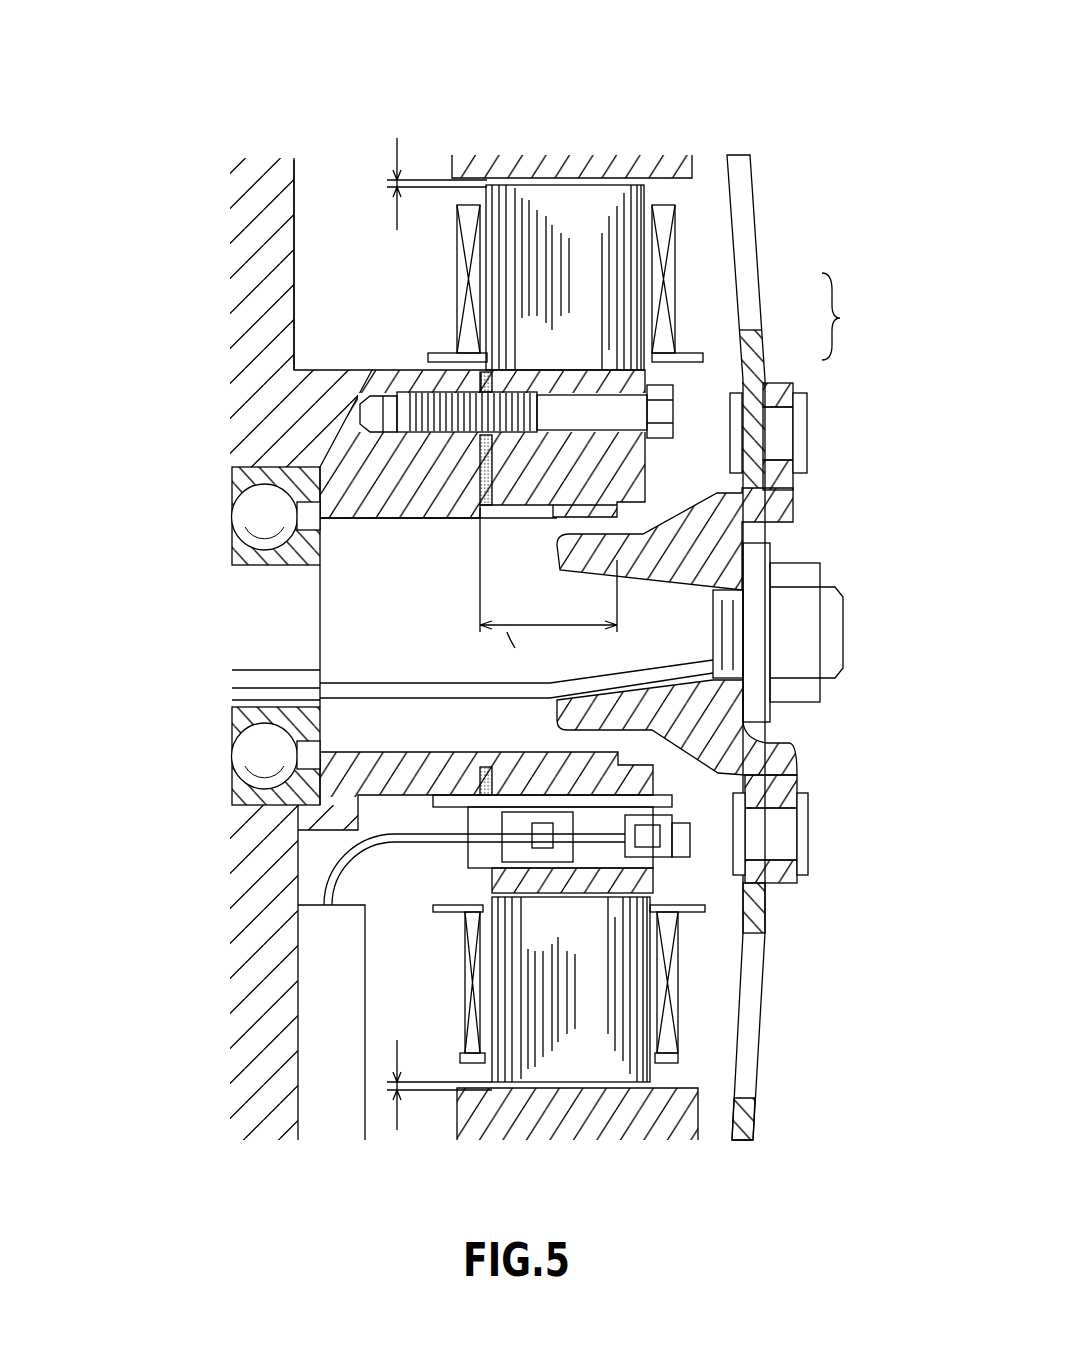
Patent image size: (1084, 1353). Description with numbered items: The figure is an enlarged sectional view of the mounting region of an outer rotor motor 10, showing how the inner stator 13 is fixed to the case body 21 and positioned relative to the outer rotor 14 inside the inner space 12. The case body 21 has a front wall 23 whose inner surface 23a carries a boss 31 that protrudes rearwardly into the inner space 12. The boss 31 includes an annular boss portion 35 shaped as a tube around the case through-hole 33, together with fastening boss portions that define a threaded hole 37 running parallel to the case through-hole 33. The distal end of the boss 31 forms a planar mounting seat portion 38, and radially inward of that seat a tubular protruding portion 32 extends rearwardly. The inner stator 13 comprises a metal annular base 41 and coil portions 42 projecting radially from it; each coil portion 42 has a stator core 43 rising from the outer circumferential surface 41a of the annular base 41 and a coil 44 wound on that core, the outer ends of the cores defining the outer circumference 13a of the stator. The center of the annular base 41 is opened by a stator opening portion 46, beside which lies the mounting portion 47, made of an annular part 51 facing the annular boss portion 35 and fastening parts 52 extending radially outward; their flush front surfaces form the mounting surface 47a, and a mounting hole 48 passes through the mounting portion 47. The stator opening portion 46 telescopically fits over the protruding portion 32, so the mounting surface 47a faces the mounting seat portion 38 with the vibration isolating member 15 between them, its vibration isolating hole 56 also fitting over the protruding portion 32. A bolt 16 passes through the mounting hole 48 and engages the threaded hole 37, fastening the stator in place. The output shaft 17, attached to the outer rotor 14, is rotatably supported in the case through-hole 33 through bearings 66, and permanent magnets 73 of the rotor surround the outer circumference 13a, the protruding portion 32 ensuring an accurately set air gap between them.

The outer rotor motor 10 is at (602, 103).
The inner space 12 is at (403, 283).
The inner stator 13 is at (683, 241).
The outer circumference 13a is at (555, 186).
The outer rotor 14 is at (722, 270).
The vibration isolating member 15 is at (437, 583).
The bolt 16 is at (665, 412).
The output shaft 17 is at (740, 620).
The case body 21 is at (236, 231).
The front wall 23 is at (236, 326).
The inner surface 23a is at (295, 300).
The boss 31 is at (403, 800).
The protruding portion 32 is at (557, 525).
The case through-hole 33 is at (415, 752).
The annular boss portion 35 is at (462, 808).
The threaded hole 37 is at (383, 400).
The mounting seat portion 38 is at (500, 455).
The annular base 41 is at (700, 468).
The outer circumferential surface 41a is at (560, 895).
The coil portion 42 is at (847, 316).
The stator core 43 is at (652, 633).
The coil 44 is at (668, 342).
The stator opening portion 46 is at (628, 510).
The mounting portion 47 is at (600, 362).
The mounting surface 47a is at (478, 460).
The mounting hole 48 is at (566, 380).
The annular part 51 is at (592, 795).
The fastening part 52 is at (535, 374).
The vibration isolating hole 56 is at (483, 512).
The bearing 66 is at (240, 812).
The permanent magnet 73 is at (636, 160).